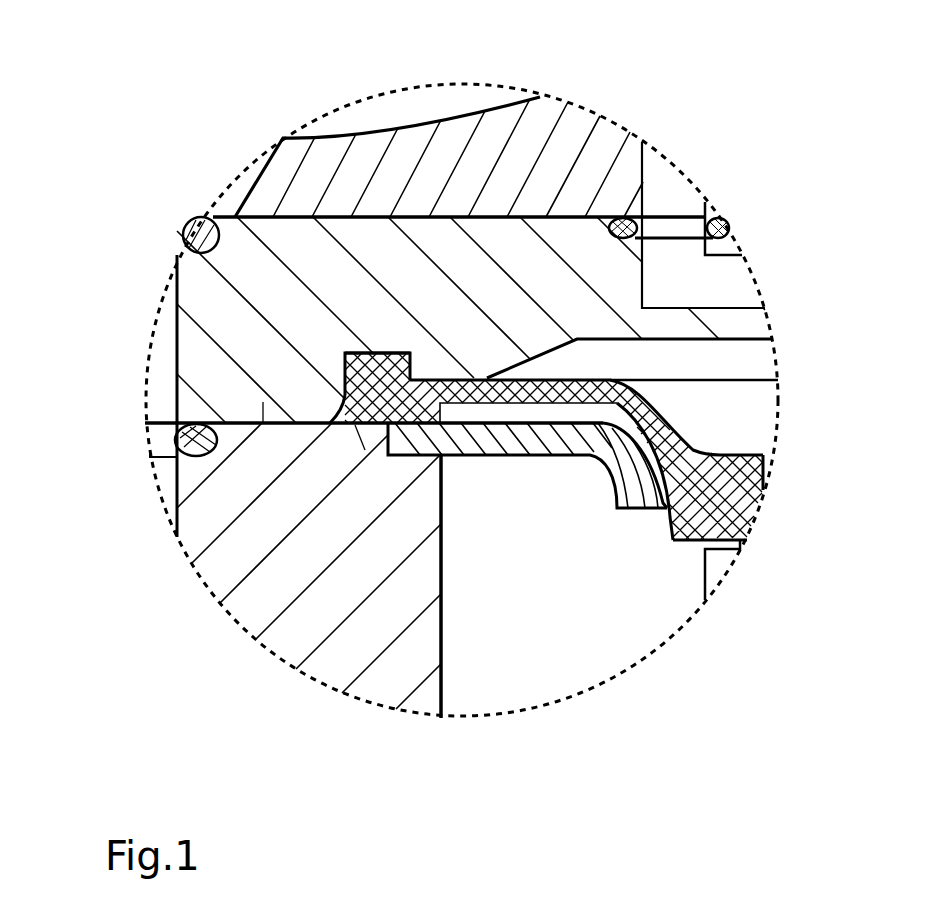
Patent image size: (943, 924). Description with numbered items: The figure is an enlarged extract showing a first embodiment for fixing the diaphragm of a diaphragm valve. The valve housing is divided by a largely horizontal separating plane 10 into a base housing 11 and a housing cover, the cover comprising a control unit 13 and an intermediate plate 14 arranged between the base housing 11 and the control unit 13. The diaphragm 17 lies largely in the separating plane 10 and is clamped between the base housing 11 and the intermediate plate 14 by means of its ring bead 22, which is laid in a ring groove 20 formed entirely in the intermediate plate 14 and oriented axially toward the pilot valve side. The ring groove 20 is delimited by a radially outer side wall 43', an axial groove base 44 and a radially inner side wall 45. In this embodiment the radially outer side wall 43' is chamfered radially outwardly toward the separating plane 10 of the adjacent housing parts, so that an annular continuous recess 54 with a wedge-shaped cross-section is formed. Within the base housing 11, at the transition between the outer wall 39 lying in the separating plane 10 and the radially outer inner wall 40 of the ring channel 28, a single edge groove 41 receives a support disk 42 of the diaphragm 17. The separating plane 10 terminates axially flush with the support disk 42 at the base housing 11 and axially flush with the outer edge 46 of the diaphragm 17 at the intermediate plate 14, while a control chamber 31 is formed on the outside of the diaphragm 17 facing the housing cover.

The separating plane 10 is at (136, 423).
The base housing 11 is at (285, 567).
The control unit 13 is at (557, 160).
The intermediate plate 14 is at (238, 325).
The diaphragm 17 is at (717, 500).
The ring groove 20 is at (350, 330).
The ring bead 22 is at (373, 390).
The ring channel 28 is at (527, 590).
The control chamber 31 is at (727, 402).
The outer wall 39 is at (263, 402).
The radially outer inner wall 40 is at (460, 580).
The edge groove 41 is at (400, 482).
The support disk 42 is at (550, 457).
The radially outer side wall 43' is at (279, 203).
The axial groove base 44 is at (393, 355).
The radially inner side wall 45 is at (430, 380).
The outer edge 46 is at (287, 565).
The annular continuous recess 54 is at (330, 423).